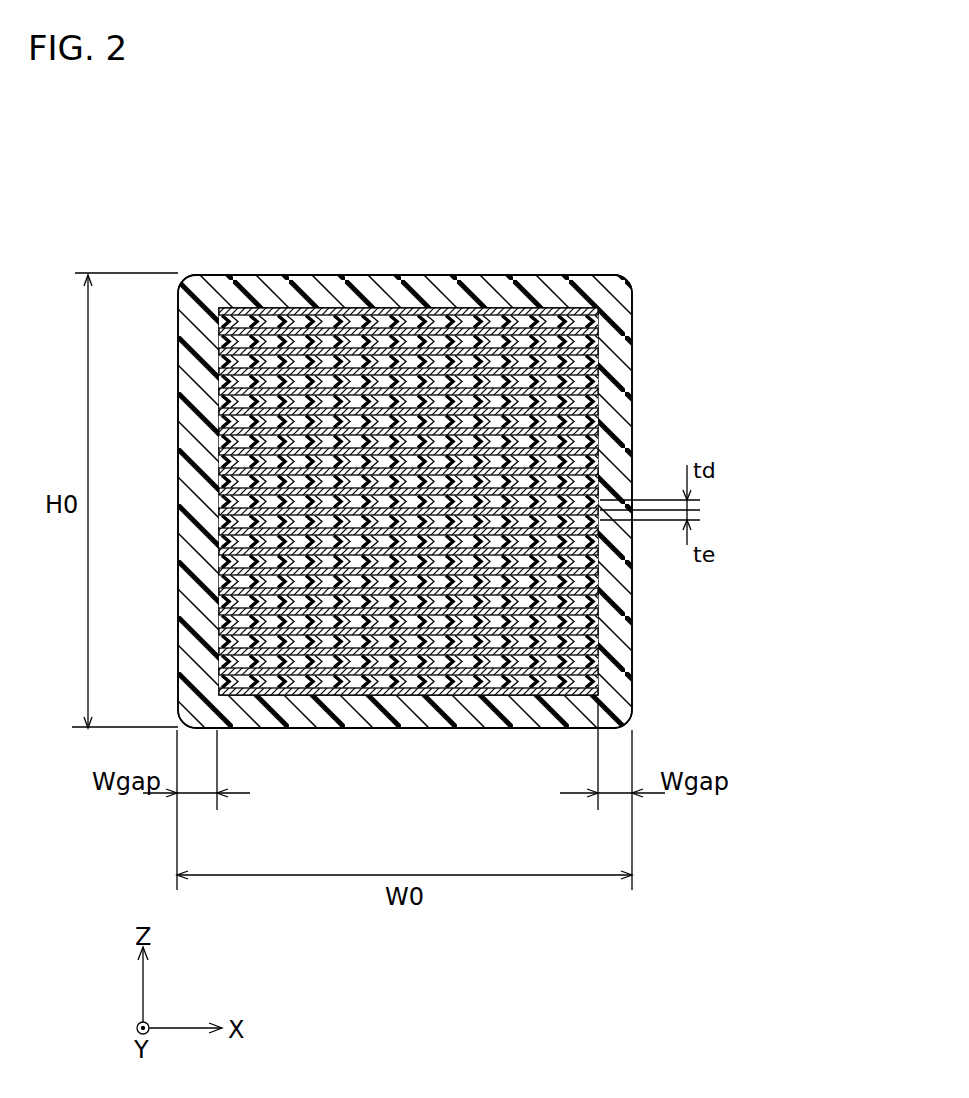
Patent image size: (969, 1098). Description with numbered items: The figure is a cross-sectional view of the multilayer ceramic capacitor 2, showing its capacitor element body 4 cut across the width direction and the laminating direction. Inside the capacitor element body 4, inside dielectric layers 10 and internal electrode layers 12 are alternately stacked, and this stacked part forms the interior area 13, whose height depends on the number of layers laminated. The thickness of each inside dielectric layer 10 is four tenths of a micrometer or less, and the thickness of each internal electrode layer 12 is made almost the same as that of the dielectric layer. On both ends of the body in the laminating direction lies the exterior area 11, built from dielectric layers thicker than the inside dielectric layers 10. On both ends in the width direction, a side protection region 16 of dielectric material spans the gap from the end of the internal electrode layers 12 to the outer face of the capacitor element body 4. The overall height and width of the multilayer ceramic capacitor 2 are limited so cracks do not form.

The multilayer ceramic capacitor 2 is at (597, 256).
The capacitor element body 4 is at (517, 275).
The inside dielectric layer 10 is at (600, 333).
The exterior area 11 is at (418, 292).
The internal electrode layer 12 is at (600, 318).
The interior area 13 is at (166, 308).
The side protection region 16 is at (202, 343).